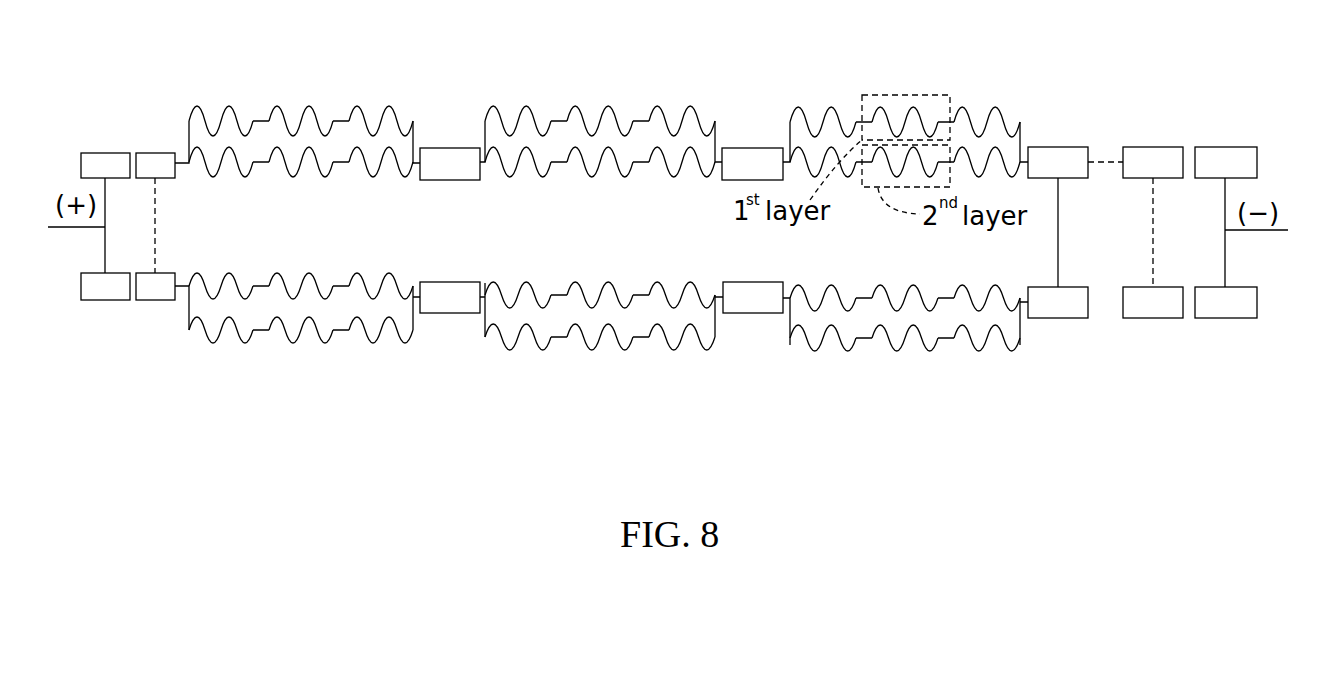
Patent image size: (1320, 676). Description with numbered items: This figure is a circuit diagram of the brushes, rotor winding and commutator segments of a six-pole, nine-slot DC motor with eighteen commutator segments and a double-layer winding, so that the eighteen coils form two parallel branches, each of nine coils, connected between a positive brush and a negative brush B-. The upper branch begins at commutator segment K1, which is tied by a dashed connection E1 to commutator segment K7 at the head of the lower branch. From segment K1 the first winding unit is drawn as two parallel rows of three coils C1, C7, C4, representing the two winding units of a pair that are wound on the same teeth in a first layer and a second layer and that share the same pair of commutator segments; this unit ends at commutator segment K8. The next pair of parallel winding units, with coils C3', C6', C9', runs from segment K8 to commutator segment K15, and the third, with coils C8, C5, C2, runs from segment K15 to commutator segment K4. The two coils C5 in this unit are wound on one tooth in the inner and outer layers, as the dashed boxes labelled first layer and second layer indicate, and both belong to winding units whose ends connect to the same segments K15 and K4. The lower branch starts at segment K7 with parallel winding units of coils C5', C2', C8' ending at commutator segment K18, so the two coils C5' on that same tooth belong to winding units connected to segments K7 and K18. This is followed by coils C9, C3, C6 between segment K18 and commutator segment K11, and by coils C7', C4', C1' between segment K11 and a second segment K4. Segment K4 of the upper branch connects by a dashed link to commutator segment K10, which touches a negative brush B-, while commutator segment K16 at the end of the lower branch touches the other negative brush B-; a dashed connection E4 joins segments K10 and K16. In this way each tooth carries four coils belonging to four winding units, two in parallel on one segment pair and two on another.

The coil C1 is at (221, 123).
The coil C7 is at (301, 123).
The coil C4 is at (381, 123).
The coil C3' is at (518, 123).
The coil C6' is at (600, 123).
The coil C9' is at (682, 123).
The coil C8 is at (823, 123).
The coil C5 is at (905, 123).
The coil C2 is at (987, 123).
The coil C5' is at (221, 291).
The coil C2' is at (301, 291).
The coil C8' is at (381, 291).
The coil C9 is at (518, 294).
The coil C3 is at (600, 294).
The coil C6 is at (682, 294).
The coil C7' is at (823, 295).
The coil C4' is at (905, 295).
The coil C1' is at (987, 295).
The commutator segment K1 is at (155, 166).
The commutator segment K7 is at (155, 287).
The commutator segment K8 is at (450, 164).
The commutator segment K18 is at (450, 297).
The commutator segment K15 is at (752, 164).
The commutator segment K11 is at (753, 297).
The commutator segment K4 is at (1058, 232).
The commutator segment K10 is at (1153, 162).
The commutator segment K16 is at (1153, 302).
The negative brush B- is at (1226, 232).
The equipotential connection E1 is at (157, 220).
The equipotential connection E4 is at (1155, 232).